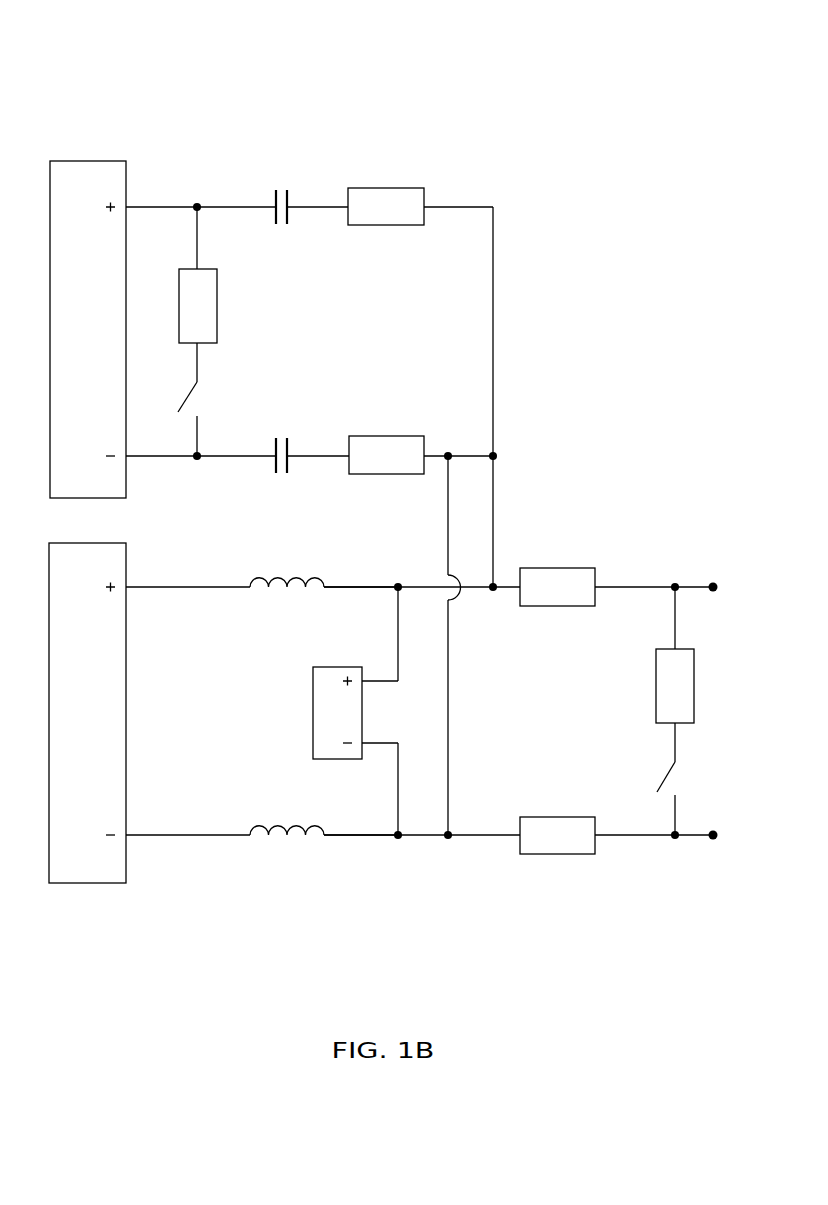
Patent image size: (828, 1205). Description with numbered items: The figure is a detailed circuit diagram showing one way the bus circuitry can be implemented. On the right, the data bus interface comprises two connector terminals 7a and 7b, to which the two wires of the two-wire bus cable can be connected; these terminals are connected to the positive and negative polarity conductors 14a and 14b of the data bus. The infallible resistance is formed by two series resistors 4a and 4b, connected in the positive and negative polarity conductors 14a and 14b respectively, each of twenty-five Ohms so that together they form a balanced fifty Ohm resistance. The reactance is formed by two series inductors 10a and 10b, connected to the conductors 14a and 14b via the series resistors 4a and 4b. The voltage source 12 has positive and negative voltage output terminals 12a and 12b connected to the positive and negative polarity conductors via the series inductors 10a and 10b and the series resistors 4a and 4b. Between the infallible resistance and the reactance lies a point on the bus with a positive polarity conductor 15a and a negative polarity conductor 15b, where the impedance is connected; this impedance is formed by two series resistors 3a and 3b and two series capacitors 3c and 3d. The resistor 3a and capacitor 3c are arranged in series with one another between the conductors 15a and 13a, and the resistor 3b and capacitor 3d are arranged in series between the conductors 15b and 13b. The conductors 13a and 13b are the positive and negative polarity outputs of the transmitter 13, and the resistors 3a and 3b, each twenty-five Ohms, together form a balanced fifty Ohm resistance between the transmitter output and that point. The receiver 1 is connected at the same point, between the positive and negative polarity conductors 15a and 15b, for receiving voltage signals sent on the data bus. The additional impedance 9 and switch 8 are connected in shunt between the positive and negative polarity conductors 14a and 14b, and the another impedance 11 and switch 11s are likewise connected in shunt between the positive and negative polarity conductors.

The receiver 1 is at (320, 712).
The series resistor 3a is at (388, 198).
The series resistor 3b is at (389, 447).
The series capacitor 3c is at (289, 195).
The series capacitor 3d is at (288, 445).
The series resistor 4a is at (558, 578).
The series resistor 4b is at (552, 847).
The connector terminal 7a is at (713, 582).
The connector terminal 7b is at (713, 840).
The switch 8 is at (663, 770).
The additional impedance 9 is at (660, 692).
The series inductor 10a is at (285, 578).
The series inductor 10b is at (255, 827).
The another impedance 11 is at (208, 292).
The switch 11s is at (192, 396).
The voltage source 12 is at (82, 870).
The positive voltage output terminal 12a is at (173, 590).
The negative voltage output terminal 12b is at (158, 838).
The transmitter 13 is at (88, 177).
The positive polarity output conductor 13a is at (163, 203).
The negative polarity output conductor 13b is at (167, 458).
The positive polarity conductor 14a is at (651, 585).
The negative polarity conductor 14b is at (643, 838).
The positive polarity conductor 15a is at (370, 585).
The negative polarity conductor 15b is at (365, 840).